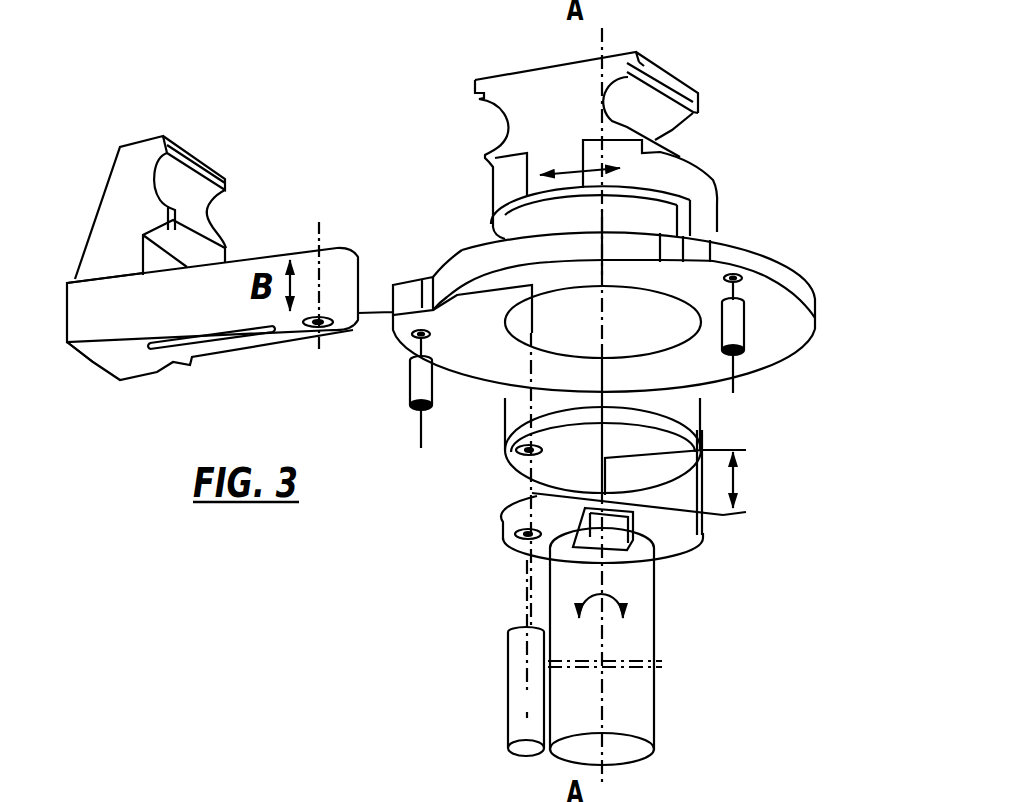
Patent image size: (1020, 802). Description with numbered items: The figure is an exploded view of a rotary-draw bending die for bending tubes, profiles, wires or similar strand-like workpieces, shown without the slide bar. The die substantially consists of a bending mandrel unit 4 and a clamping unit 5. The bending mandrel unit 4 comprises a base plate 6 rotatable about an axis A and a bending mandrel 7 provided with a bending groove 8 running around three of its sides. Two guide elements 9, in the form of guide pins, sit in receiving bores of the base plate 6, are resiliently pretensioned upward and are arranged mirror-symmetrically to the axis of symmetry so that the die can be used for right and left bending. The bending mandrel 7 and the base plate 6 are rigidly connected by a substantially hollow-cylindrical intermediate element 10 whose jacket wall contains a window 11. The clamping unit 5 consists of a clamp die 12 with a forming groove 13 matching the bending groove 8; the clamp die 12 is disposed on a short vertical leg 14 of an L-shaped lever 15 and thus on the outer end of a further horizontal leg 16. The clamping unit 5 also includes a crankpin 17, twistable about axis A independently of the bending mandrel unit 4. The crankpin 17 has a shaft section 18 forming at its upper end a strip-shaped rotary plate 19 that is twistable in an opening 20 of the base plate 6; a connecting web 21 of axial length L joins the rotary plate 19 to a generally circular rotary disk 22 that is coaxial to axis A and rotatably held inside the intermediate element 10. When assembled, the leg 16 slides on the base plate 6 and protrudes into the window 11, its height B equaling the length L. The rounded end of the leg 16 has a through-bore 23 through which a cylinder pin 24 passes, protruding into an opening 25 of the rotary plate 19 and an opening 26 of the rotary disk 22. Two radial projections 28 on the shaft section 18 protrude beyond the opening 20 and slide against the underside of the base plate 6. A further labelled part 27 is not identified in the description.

The bending mandrel unit 4 is at (778, 128).
The clamping unit 5 is at (297, 417).
The base plate 6 is at (743, 255).
The bending mandrel 7 is at (538, 80).
The bending groove 8 is at (500, 121).
The guide elements 9 is at (410, 386).
The intermediate element 10 is at (667, 173).
The window 11 is at (650, 213).
The clamp die 12 is at (122, 178).
The forming groove 13 is at (175, 188).
The short leg 14 is at (103, 283).
The L-shaped lever 15 is at (257, 228).
The leg 16 is at (217, 313).
The crankpin 17 is at (724, 602).
The shaft section 18 is at (640, 645).
The rotary plate 19 is at (672, 523).
The opening 20 is at (652, 337).
The connecting web 21 is at (662, 470).
The rotary disk 22 is at (547, 467).
The through-bore 23 is at (316, 306).
The cylinder pin 24 is at (515, 675).
The opening 25 is at (522, 537).
The opening 26 is at (512, 446).
The bottom face 27 is at (150, 353).
The radial projections 28 is at (597, 548).